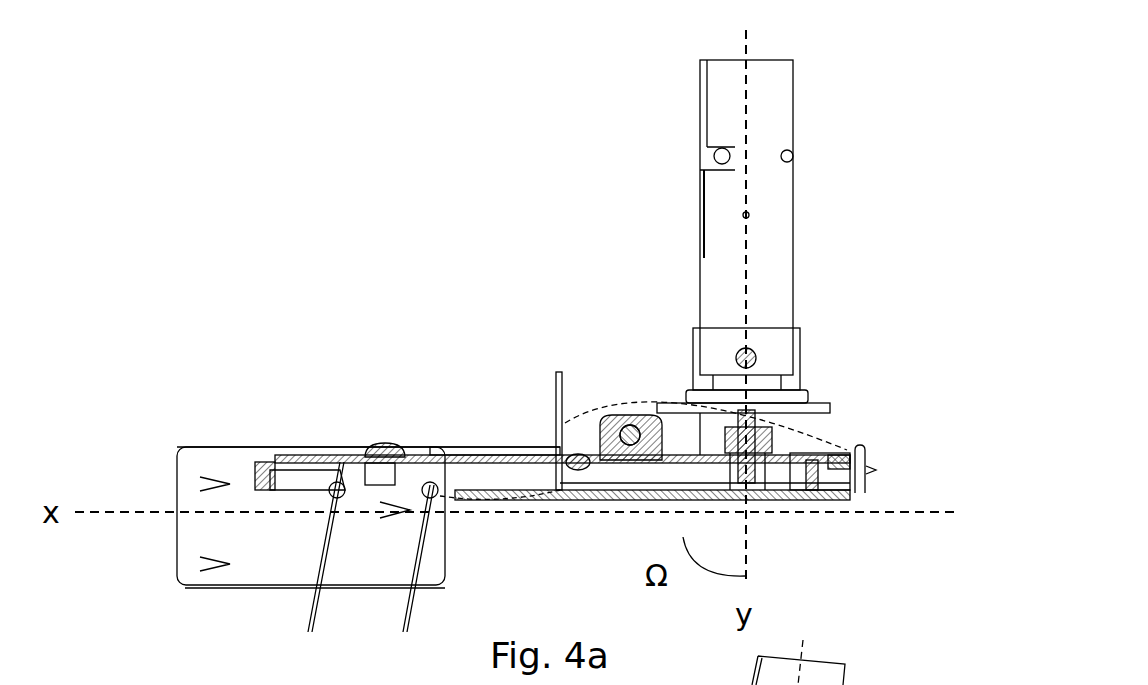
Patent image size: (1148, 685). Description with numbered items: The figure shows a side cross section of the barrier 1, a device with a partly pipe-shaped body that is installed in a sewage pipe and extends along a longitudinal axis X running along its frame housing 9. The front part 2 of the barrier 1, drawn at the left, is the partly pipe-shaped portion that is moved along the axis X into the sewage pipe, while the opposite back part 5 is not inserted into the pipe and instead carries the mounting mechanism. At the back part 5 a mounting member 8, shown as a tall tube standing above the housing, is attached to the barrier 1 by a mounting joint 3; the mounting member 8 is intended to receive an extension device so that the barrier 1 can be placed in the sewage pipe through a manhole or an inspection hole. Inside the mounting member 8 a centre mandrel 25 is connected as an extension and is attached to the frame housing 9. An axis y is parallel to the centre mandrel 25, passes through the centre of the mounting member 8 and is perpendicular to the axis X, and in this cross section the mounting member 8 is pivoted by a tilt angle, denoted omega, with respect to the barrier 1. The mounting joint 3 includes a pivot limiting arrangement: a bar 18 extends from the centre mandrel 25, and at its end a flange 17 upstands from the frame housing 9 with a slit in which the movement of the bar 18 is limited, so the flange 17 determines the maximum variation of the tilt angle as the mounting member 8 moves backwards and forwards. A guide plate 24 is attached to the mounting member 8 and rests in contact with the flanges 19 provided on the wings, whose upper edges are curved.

The barrier 1 is at (455, 323).
The front part 2 is at (250, 410).
The mounting joint 3 is at (739, 231).
The back part 5 is at (885, 465).
The mounting member 8 is at (698, 190).
The frame housing 9 is at (458, 480).
The flange 17 is at (632, 415).
The bar 18 is at (688, 445).
The flanges 19 is at (798, 445).
The guide plate 24 is at (820, 393).
The centre mandrel 25 is at (748, 485).